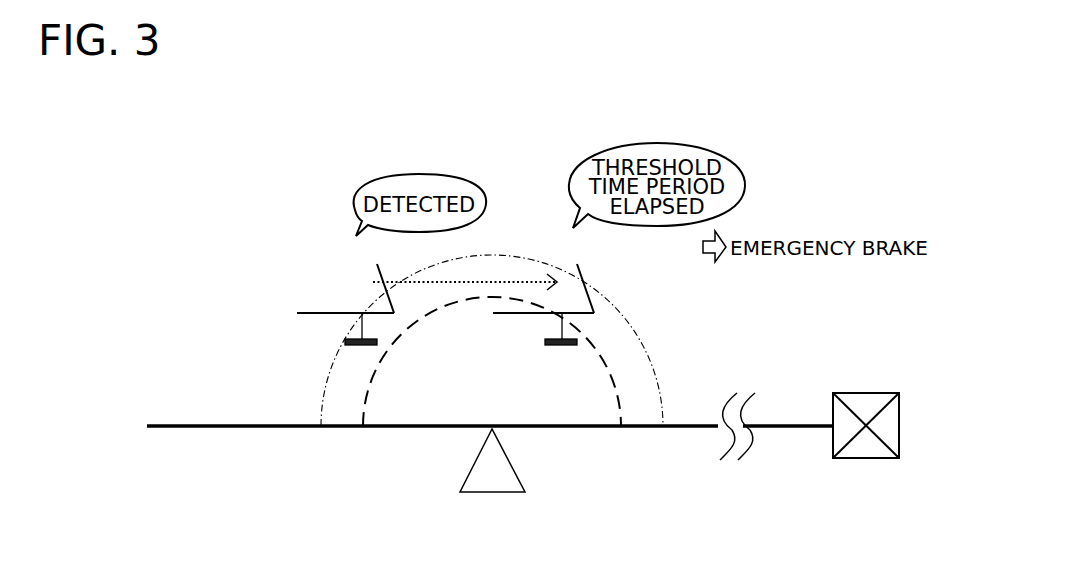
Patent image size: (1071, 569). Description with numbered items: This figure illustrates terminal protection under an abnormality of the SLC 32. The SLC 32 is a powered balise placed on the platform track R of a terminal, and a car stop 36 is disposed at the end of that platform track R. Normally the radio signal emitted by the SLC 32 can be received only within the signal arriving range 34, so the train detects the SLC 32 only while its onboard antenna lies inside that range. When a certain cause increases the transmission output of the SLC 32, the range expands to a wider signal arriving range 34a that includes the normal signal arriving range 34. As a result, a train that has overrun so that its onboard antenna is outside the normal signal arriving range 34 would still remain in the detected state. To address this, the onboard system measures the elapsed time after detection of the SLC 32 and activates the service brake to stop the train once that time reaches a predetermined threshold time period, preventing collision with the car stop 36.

The SLC 32 is at (495, 492).
The signal arriving range 34 is at (617, 384).
The signal arriving range 34a is at (652, 366).
The car stop 36 is at (867, 458).
The platform track R is at (215, 428).